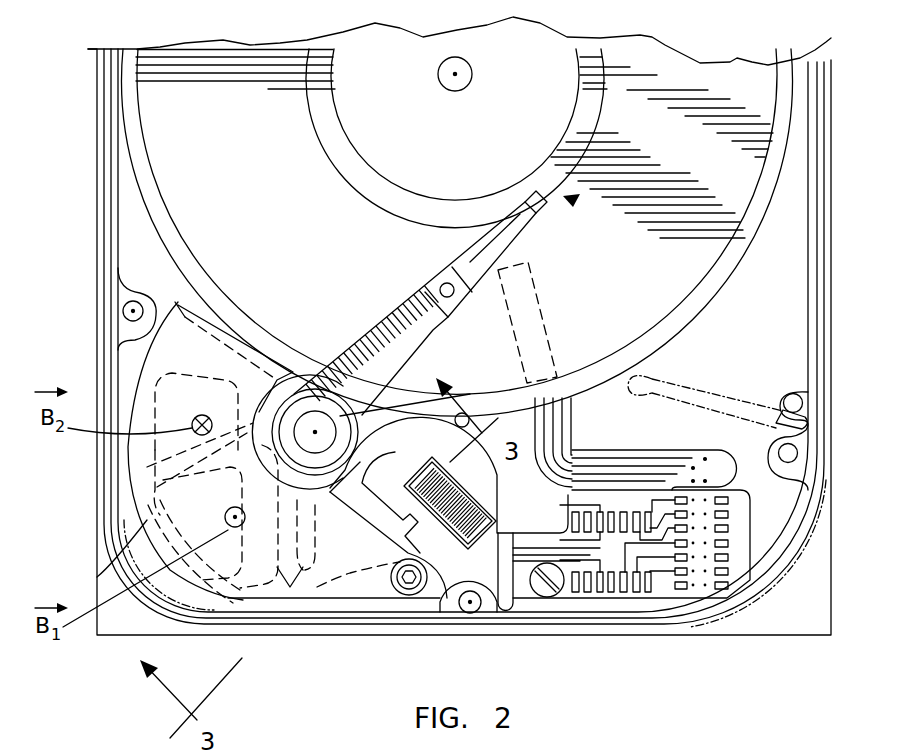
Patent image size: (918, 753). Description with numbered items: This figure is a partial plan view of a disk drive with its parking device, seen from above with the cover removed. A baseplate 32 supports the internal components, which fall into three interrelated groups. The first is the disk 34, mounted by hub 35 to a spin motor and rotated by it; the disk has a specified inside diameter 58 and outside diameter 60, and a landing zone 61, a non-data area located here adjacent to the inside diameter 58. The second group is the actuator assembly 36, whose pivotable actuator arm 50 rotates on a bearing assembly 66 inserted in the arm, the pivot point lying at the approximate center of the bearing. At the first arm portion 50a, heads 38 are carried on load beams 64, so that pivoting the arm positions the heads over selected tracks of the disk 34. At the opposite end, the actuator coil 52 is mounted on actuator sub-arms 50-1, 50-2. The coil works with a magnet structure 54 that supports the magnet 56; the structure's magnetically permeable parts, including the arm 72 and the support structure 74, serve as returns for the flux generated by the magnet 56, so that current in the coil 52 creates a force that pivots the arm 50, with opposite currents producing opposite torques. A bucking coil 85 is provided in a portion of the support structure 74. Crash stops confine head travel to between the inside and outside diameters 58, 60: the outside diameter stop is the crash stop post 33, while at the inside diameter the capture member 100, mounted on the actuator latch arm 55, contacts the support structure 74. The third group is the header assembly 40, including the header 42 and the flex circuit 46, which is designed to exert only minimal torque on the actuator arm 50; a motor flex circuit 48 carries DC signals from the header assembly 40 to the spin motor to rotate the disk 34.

The baseplate 32 is at (786, 622).
The crash stop post 33 is at (556, 412).
The disk 34 is at (160, 118).
The hub 35 is at (368, 123).
The actuator assembly 36 is at (295, 365).
The head 38 is at (549, 208).
The header assembly 40 is at (599, 616).
The header 42 is at (695, 592).
The flex circuit 46 is at (503, 490).
The motor flex circuit 48 is at (596, 444).
The actuator arm 50 is at (358, 357).
The first arm portion 50a is at (445, 272).
The actuator sub-arm 50-1 is at (222, 423).
The actuator sub-arm 50-2 is at (300, 590).
The actuator coil 52 is at (97, 577).
The magnet structure 54 is at (335, 568).
The actuator latch arm 55 is at (375, 466).
The magnet 56 is at (185, 570).
The inside diameter 58 is at (341, 170).
The outside diameter 60 is at (163, 193).
The landing zone 61 is at (573, 200).
The load beam 64 is at (510, 237).
The bearing assembly 66 is at (384, 406).
The arm 72 is at (182, 300).
The support structure 74 is at (490, 605).
The bucking coil 85 is at (470, 490).
The capture member 100 is at (425, 594).